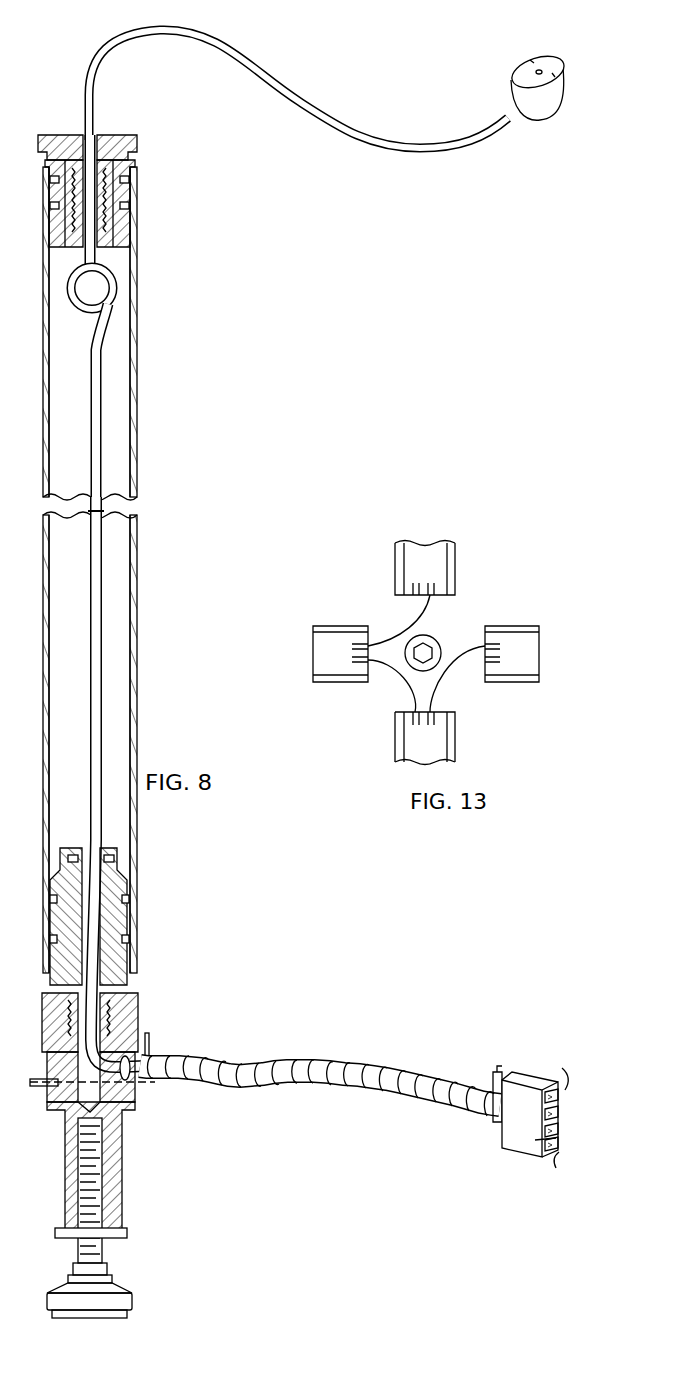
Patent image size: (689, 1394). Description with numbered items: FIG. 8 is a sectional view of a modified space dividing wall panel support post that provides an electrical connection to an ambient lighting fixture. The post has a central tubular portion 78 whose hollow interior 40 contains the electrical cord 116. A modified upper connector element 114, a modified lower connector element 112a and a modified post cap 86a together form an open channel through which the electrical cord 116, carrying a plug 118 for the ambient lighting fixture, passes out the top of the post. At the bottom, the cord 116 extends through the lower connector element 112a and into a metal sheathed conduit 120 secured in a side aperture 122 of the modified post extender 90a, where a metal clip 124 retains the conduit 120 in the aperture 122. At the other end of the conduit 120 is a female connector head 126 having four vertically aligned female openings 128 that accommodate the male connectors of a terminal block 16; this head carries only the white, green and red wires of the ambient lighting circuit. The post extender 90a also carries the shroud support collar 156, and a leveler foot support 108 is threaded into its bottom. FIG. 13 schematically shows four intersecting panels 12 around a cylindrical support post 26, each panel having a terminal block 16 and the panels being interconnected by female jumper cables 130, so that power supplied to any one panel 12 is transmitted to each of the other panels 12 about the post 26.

In FIG. 8, the post cap 86a is at (113, 166).
In FIG. 8, the upper connector element 114 is at (120, 218).
In FIG. 8, the electrical cord 116 is at (305, 107).
In FIG. 8, the plug 118 is at (512, 80).
In FIG. 8, the central tubular portion 78 is at (135, 627).
In FIG. 8, the tube interior 40 is at (120, 704).
In FIG. 8, the lower connector element 112a is at (137, 1000).
In FIG. 8, the post extender 90a is at (105, 1118).
In FIG. 8, the side aperture 122 is at (126, 1096).
In FIG. 8, the metal clip 124 is at (150, 1044).
In FIG. 8, the metal sheathed conduit 120 is at (311, 1065).
In FIG. 8, the female connector head 126 is at (511, 1106).
In FIG. 8, the female openings 128 is at (557, 1108).
In FIG. 8, the shroud support collar 156 is at (118, 1232).
In FIG. 8, the foot support 108 is at (112, 1296).
In FIG. 13, the space dividing wall panel 12 is at (397, 568).
In FIG. 13, the terminal block 16 is at (440, 559).
In FIG. 13, the cylindrical support post 26 is at (424, 641).
In FIG. 13, the female jumper cable 130 is at (418, 628).